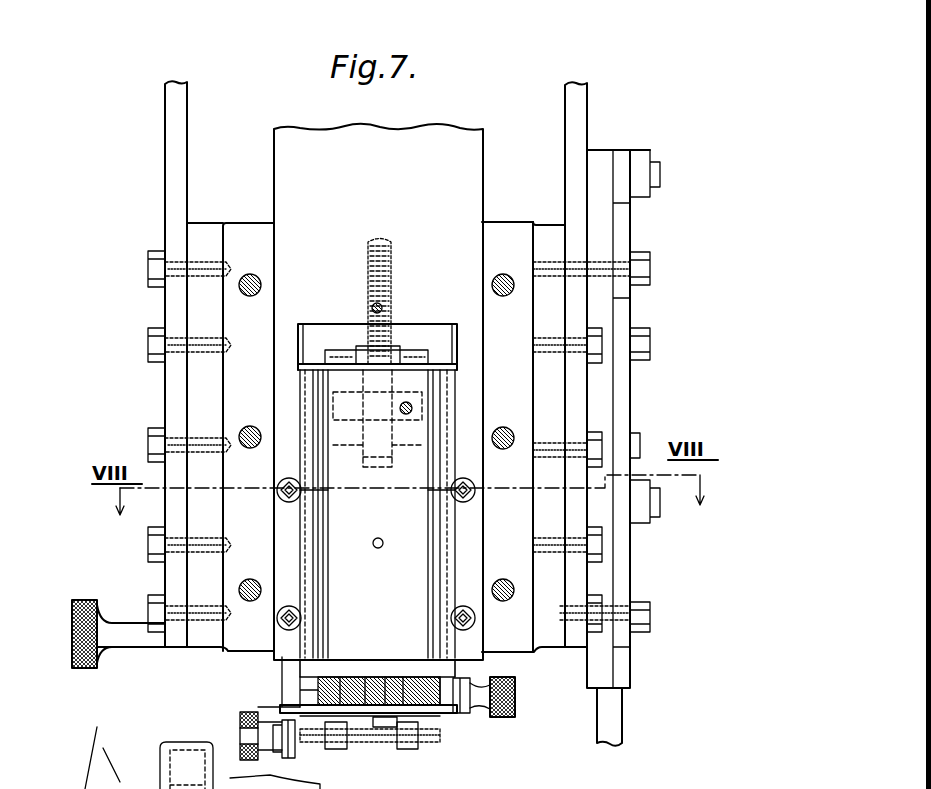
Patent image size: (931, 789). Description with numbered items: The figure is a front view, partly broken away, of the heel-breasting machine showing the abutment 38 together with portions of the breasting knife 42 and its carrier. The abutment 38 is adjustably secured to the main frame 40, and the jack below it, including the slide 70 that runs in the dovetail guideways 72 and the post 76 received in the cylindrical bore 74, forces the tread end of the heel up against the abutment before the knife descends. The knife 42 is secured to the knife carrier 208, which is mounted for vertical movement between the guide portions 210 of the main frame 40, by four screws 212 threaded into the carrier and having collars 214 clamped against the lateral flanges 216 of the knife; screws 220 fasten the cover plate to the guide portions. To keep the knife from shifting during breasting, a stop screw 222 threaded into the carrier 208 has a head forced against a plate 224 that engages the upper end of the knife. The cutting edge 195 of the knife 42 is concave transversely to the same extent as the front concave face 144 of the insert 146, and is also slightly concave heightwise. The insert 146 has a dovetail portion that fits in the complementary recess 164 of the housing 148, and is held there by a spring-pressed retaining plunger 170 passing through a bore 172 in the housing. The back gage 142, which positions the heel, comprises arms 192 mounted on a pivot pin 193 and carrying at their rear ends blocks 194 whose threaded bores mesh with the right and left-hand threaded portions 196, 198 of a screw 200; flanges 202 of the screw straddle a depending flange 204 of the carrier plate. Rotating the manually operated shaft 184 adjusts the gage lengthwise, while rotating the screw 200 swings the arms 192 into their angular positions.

The abutment 38 is at (500, 743).
The main frame 40 is at (502, 232).
The knife 42 is at (420, 552).
The slide 70 is at (274, 779).
The dovetail guideways 72 is at (403, 690).
The cylindrical bore 74 is at (158, 742).
The post 76 is at (178, 742).
The back gage 142 is at (430, 733).
The front concave face 144 is at (365, 690).
The insert 146 is at (385, 690).
The housing 148 is at (300, 690).
The recess 164 is at (325, 695).
The retaining plunger 170 is at (490, 720).
The bore 172 is at (475, 675).
The shaft 184 is at (135, 640).
The arms 192 is at (345, 725).
The pivot pin 193 is at (350, 748).
The blocks 194 is at (410, 748).
The cutting edge 195 is at (345, 690).
The right-hand threaded portion 196 is at (430, 745).
The left-hand threaded portion 198 is at (282, 720).
The screw 200 is at (245, 718).
The flanges 202 is at (312, 722).
The depending flange 204 is at (242, 758).
The knife carrier 208 is at (470, 170).
The guide portions 210 is at (252, 228).
The screws 212 is at (283, 611).
The collars 214 is at (277, 482).
The lateral flanges 216 is at (455, 385).
The screws 220 is at (250, 425).
The stop screw 222 is at (390, 340).
The plate 224 is at (437, 366).